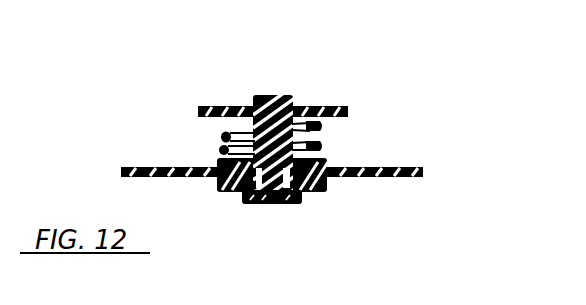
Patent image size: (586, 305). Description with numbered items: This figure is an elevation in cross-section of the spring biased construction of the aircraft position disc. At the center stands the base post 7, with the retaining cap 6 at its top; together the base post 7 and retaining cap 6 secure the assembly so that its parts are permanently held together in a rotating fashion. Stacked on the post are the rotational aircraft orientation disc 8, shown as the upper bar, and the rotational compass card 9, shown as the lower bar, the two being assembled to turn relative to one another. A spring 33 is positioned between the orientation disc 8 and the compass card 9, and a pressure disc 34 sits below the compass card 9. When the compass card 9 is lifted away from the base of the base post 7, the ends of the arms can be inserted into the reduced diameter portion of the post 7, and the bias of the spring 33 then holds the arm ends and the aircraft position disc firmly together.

The retaining cap 6 is at (262, 96).
The base post 7 is at (264, 206).
The aircraft orientation disc 8 is at (345, 106).
The compass card 9 is at (141, 167).
The spring 33 is at (322, 146).
The pressure disc 34 is at (327, 184).